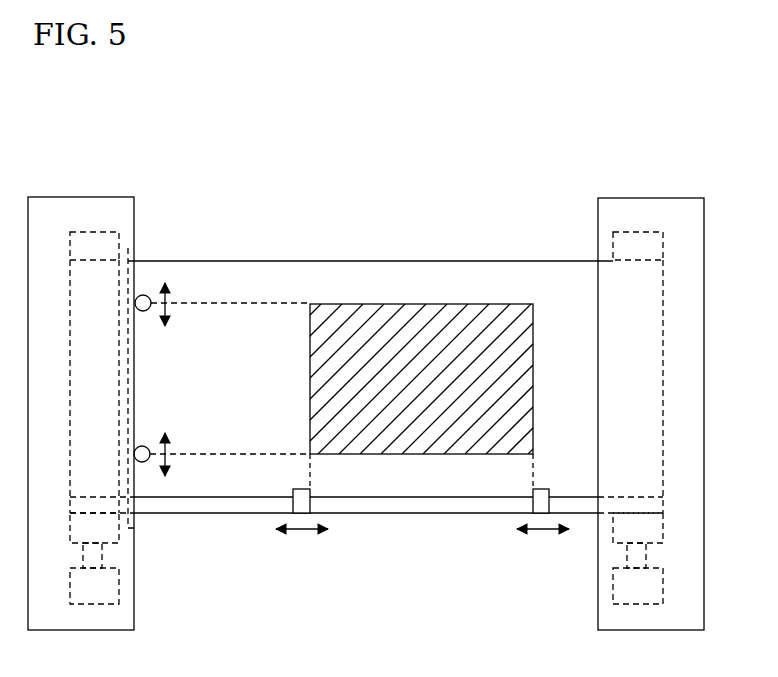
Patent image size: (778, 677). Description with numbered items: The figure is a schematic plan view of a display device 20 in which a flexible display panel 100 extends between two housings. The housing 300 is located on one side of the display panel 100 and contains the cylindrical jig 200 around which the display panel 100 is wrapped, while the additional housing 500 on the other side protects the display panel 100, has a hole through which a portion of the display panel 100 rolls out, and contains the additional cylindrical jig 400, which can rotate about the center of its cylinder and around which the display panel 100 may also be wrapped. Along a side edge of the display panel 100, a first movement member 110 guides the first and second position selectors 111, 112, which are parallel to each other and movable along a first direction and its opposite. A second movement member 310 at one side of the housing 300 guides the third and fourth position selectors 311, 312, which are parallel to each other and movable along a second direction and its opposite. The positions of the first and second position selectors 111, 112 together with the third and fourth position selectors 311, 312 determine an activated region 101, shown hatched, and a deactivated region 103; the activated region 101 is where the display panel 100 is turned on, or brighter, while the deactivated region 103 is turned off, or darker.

The display device 20 is at (58, 100).
The display panel 100 is at (522, 246).
The activated region 101 is at (440, 310).
The deactivated region 103 is at (354, 272).
The first movement member 110 is at (424, 507).
The first position selector 111 is at (299, 507).
The second position selector 112 is at (538, 507).
The cylindrical jig 200 is at (119, 587).
The housing 300 is at (149, 189).
The second movement member 310 is at (130, 248).
The third position selector 311 is at (145, 297).
The fourth position selector 312 is at (142, 462).
The additional cylindrical jig 400 is at (613, 594).
The additional housing 500 is at (648, 198).